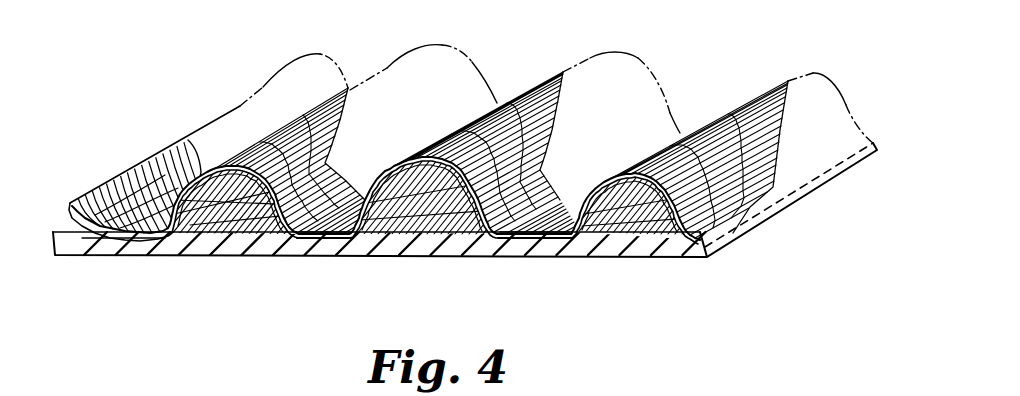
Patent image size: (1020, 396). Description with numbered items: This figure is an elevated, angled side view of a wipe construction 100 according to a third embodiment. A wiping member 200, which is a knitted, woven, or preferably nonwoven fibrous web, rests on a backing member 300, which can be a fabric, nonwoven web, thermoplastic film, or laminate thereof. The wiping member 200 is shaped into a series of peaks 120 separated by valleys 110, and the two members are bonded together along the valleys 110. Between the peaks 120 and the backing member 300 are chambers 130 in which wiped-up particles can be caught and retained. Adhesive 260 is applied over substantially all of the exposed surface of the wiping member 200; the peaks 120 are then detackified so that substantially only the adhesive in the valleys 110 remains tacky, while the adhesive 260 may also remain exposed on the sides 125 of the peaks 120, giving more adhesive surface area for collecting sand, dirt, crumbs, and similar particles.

The wipe construction 100 is at (786, 46).
The valleys 110 is at (505, 257).
The peaks 120 is at (459, 156).
The sides of the peaks 125 is at (357, 197).
The chambers 130 is at (233, 202).
The wiping member 200 is at (463, 171).
The adhesive 260 is at (280, 222).
The backing member 300 is at (135, 243).